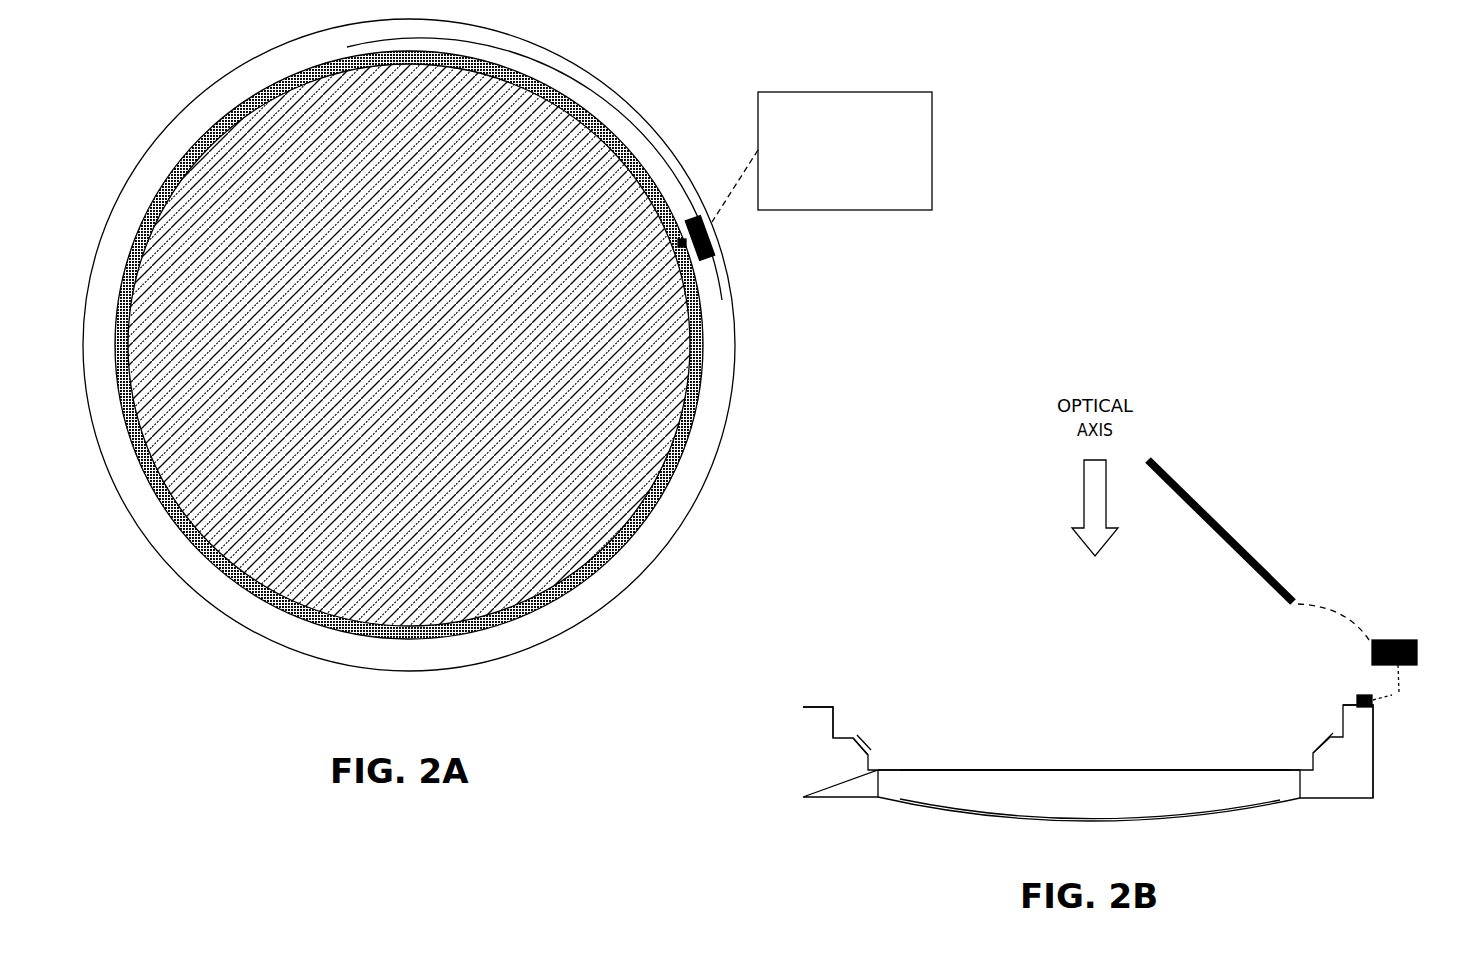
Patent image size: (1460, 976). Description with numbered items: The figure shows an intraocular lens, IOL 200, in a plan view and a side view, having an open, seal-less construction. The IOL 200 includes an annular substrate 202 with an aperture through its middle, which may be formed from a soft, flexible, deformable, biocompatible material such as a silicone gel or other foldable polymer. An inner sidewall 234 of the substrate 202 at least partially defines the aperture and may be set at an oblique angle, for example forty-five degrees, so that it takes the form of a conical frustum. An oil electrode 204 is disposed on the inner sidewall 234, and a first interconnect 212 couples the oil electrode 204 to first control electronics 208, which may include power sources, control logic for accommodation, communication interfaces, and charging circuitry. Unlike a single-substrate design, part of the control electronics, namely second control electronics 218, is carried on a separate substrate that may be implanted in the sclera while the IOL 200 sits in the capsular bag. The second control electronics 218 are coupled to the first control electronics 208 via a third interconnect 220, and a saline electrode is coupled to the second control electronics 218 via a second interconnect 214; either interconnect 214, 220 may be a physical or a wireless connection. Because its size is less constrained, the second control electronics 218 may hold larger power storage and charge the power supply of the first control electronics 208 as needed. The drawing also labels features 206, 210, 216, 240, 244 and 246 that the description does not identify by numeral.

In FIG. 2A, the IOL 200 is at (1105, 177).
In FIG. 2A, the substrate 202 is at (734, 365).
In FIG. 2B, the substrate 202 is at (803, 775).
In FIG. 2A, the oil electrode 204 is at (692, 429).
In FIG. 2B, the oil electrode 204 is at (860, 740).
In FIG. 2A, the lens 206 is at (584, 460).
In FIG. 2B, the lens 206 is at (1024, 805).
In FIG. 2A, the first control electronics 208 is at (717, 254).
In FIG. 2B, the first control electronics 208 is at (1375, 708).
In FIG. 2A, the conductive trace 210 is at (635, 127).
In FIG. 2A, the first interconnect 212 is at (686, 247).
In FIG. 2B, the first interconnect 212 is at (1341, 711).
In FIG. 2B, the second interconnect 214 is at (1330, 610).
In FIG. 2B, the mirror 216 is at (1225, 528).
In FIG. 2A, the second control electronics 218 is at (858, 188).
In FIG. 2B, the second control electronics 218 is at (1395, 640).
In FIG. 2B, the third interconnect 220 is at (1398, 697).
In FIG. 2B, the inner sidewall 234 is at (857, 747).
In FIG. 2B, the frame flange 240 is at (823, 707).
In FIG. 2B, the lens bottom surface 244 is at (1170, 817).
In FIG. 2B, the lens top surface 246 is at (1012, 770).